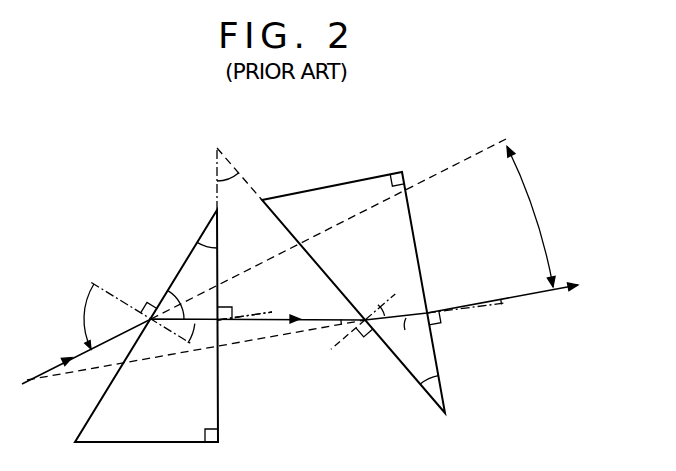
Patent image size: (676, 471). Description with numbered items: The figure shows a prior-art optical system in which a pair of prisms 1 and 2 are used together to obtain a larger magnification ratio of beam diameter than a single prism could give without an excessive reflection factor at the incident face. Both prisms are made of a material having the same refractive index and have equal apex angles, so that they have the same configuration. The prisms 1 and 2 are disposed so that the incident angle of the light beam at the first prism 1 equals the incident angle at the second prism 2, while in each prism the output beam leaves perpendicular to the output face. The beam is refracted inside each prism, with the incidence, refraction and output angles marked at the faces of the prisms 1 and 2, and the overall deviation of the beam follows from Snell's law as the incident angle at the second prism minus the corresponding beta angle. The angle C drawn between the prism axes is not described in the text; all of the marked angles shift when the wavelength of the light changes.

The prism 1 is at (181, 263).
The prism 2 is at (350, 181).
The apex angle C is at (228, 193).